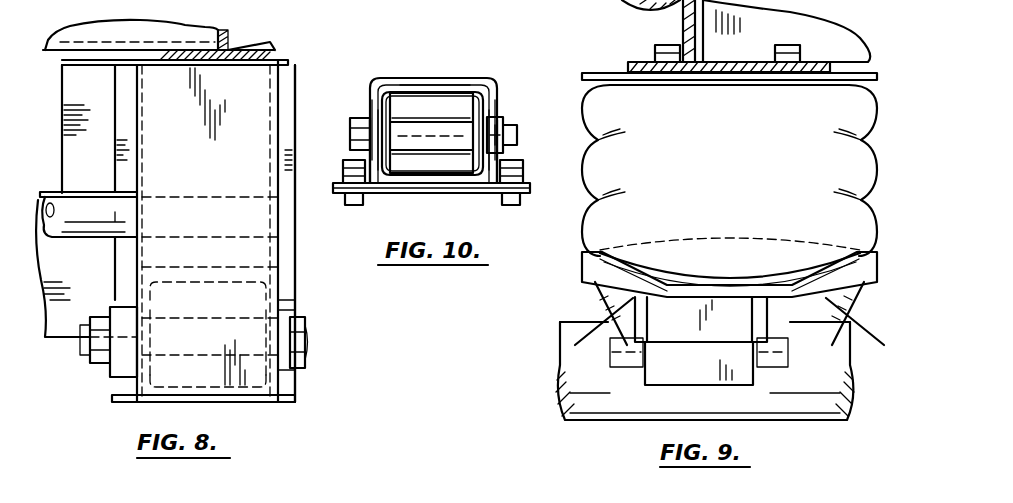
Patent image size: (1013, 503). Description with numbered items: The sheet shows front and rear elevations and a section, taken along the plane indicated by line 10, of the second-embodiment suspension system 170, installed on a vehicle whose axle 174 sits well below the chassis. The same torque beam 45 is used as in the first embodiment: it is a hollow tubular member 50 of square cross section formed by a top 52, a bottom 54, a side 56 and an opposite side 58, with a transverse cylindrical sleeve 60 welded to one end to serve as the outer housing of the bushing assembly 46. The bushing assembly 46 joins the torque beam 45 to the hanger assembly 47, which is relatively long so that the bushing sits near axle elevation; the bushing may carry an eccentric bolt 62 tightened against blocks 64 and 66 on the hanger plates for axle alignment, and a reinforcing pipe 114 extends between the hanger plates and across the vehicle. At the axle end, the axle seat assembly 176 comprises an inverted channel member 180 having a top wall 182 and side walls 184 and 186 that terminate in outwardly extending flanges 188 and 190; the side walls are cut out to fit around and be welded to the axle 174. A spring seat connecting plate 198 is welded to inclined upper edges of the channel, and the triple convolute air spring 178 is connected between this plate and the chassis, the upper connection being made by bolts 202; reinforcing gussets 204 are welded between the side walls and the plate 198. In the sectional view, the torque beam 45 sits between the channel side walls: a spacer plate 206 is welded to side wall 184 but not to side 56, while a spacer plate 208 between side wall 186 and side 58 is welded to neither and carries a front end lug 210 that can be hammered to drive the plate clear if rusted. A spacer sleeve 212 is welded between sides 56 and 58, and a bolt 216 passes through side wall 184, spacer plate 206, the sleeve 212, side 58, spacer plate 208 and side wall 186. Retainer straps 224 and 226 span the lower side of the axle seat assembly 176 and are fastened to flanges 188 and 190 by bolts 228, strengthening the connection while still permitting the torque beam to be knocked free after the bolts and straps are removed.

In FIG. 10, the section line 10— 10 is at (333, 8).
In FIG. 8, the torque beam 45 is at (306, 0).
In FIG. 8, the bushing assembly 46 is at (250, 400).
In FIG. 8, the hanger assembly 47 is at (282, 108).
In FIG. 10, the hollow tubular member 50 is at (400, 78).
In FIG. 10, the top 52 is at (460, 79).
In FIG. 10, the bottom 54 is at (455, 183).
In FIG. 10, the side 56 is at (372, 106).
In FIG. 10, the squared-off end 58 is at (498, 101).
In FIG. 8, the transverse cylindrical sleeve 60 is at (255, 281).
In FIG. 8, the eccentric bolt 62 is at (302, 341).
In FIG. 8, the block 64 is at (288, 378).
In FIG. 8, the block 66 is at (125, 368).
In FIG. 8, the reinforcing pipe 114 is at (74, 240).
In FIG. 9, the suspension system 170 is at (537, 0).
In FIG. 9, the axle 174 is at (582, 419).
In FIG. 9, the axle seat assembly 176 is at (643, 373).
In FIG. 9, the air spring 178 is at (878, 156).
In FIG. 10, the inverted channel member 180 is at (432, 85).
In FIG. 10, the top wall 182 is at (425, 74).
In FIG. 10, the side wall 184 is at (372, 98).
In FIG. 10, the side wall 186 is at (490, 93).
In FIG. 10, the outwardly extending flange 188 is at (338, 183).
In FIG. 10, the outwardly extending flange 190 is at (532, 181).
In FIG. 9, the spring seat connecting plate 198 is at (880, 259).
In FIG. 9, the bolt 202 is at (712, 46).
In FIG. 9, the reinforcing gusset 204 is at (597, 297).
In FIG. 10, the spacer plate 206 is at (398, 184).
In FIG. 10, the spacer plate 208 is at (484, 184).
In FIG. 10, the front end lug 210 is at (505, 113).
In FIG. 10, the spacer sleeve 212 is at (432, 142).
In FIG. 10, the bolt 216 is at (350, 131).
In FIG. 10, the retainer strap 224 is at (530, 192).
In FIG. 9, the retainer strap 226 is at (591, 12).
In FIG. 10, the bolt 228 is at (345, 205).